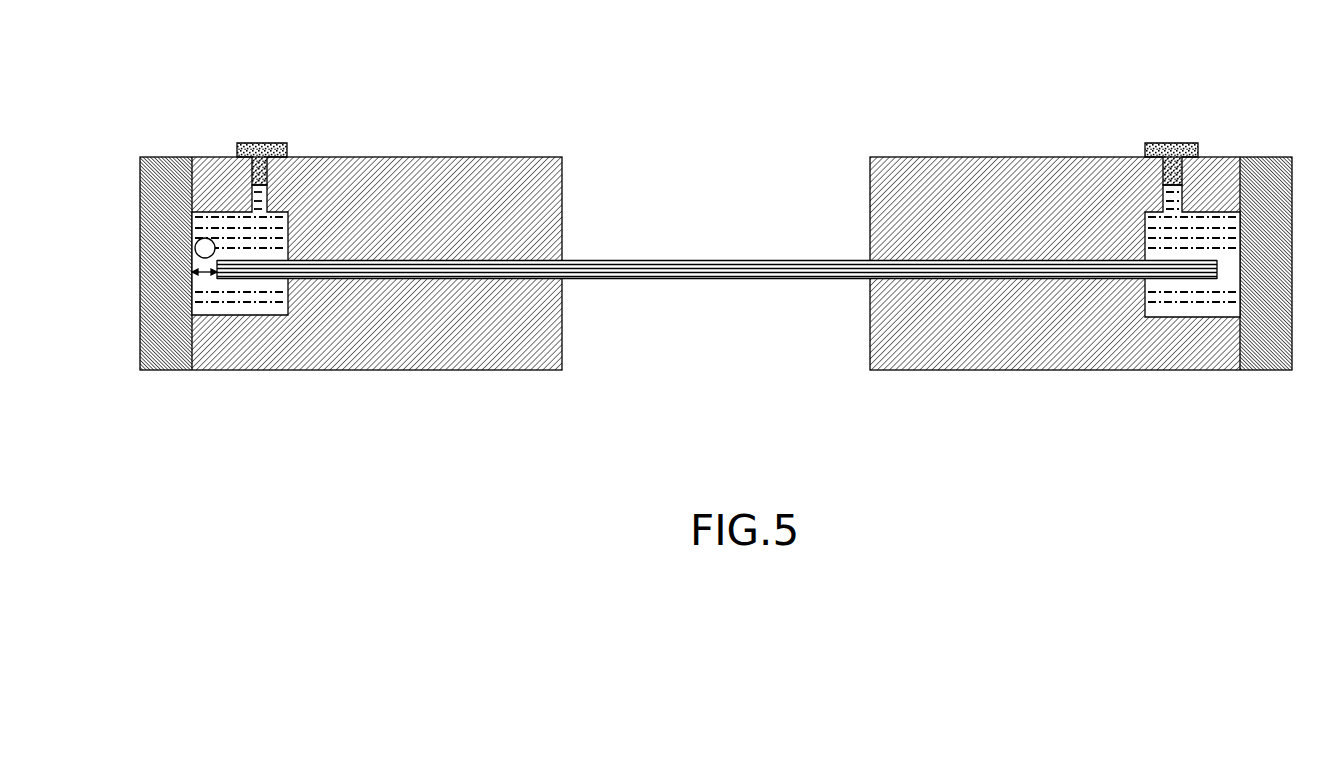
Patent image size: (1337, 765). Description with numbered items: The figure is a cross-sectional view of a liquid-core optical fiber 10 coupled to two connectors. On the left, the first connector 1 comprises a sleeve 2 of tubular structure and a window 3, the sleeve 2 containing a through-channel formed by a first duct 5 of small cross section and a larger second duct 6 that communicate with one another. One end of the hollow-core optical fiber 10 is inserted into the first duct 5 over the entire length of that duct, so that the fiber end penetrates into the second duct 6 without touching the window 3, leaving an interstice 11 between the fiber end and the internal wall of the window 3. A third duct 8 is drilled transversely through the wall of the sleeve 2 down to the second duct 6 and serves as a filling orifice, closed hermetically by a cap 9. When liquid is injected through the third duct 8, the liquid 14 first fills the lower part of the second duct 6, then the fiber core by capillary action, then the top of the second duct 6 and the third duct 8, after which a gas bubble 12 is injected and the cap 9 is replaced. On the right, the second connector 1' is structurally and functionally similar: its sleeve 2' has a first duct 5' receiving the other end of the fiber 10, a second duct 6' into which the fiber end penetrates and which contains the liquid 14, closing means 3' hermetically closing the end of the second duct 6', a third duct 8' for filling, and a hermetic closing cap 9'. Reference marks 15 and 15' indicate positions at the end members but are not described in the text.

The connector 1 is at (365, 219).
The sleeve 2 is at (377, 219).
The window 3 is at (166, 223).
The first duct 5 is at (425, 344).
The second duct 6 is at (240, 315).
The third duct 8 is at (306, 145).
The cap 9 is at (262, 121).
The optical fiber 10 is at (600, 258).
The interstice 11 is at (213, 279).
The gas bubble 12 is at (206, 246).
The liquid 14 is at (283, 305).
The end member boundary 15 is at (166, 393).
The second connector 1' is at (1063, 221).
The sleeve 2' is at (1055, 221).
The closing means 3' is at (1266, 223).
The first duct 5' is at (1007, 344).
The second duct 6' is at (1192, 316).
The third duct 8' is at (1207, 142).
The hermetic closing cap 9' is at (1171, 126).
The end member boundary 15' is at (1275, 395).